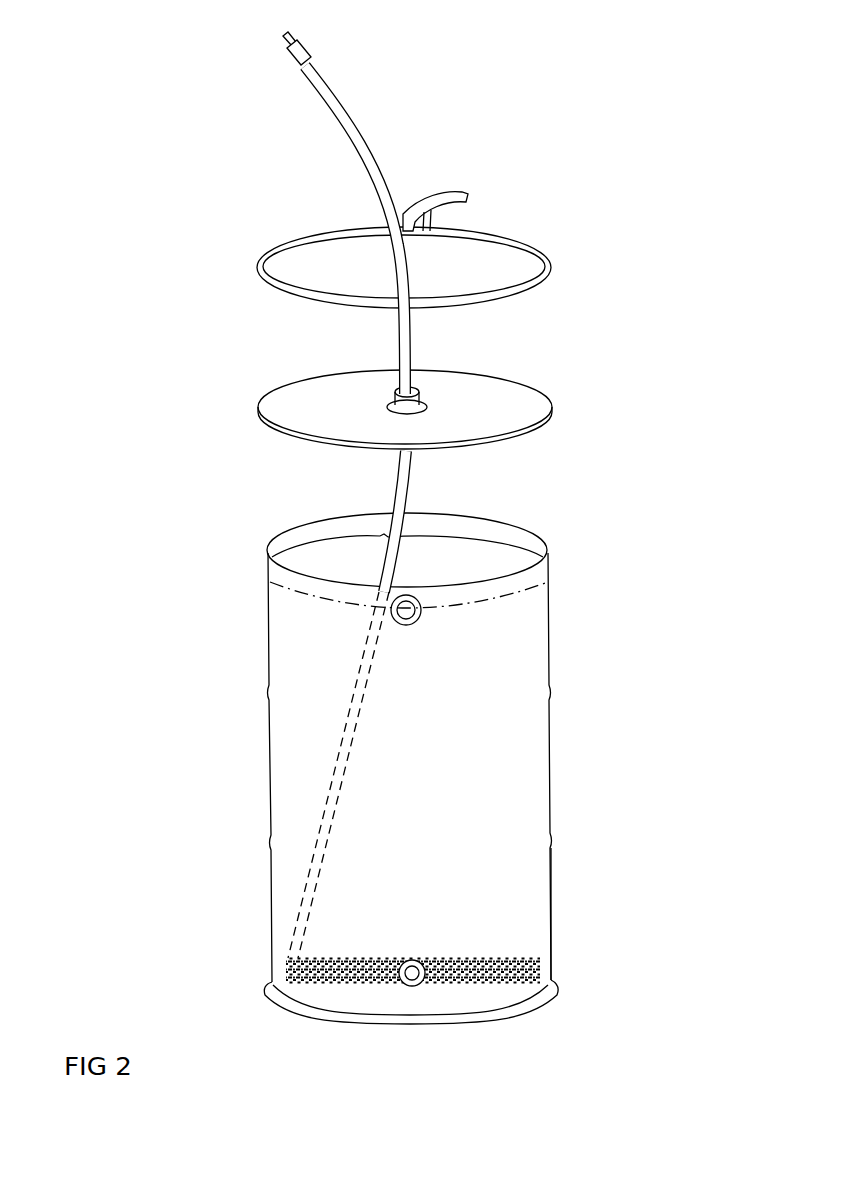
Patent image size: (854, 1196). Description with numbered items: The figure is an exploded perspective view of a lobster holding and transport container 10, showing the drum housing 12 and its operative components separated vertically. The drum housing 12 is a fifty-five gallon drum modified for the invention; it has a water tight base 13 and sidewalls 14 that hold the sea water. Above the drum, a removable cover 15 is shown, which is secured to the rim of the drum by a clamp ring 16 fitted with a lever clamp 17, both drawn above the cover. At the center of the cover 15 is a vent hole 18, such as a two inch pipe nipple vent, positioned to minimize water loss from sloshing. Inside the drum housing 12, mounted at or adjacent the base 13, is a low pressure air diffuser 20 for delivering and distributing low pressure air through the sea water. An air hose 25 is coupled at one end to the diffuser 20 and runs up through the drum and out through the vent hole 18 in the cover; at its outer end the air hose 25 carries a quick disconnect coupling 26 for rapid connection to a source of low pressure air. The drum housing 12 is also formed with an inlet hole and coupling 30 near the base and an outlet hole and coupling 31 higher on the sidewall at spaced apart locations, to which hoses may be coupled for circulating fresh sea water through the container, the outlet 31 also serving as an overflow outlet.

The container 10 is at (689, 324).
The drum housing 12 is at (549, 636).
The water tight base 13 is at (556, 1000).
The sidewalls 14 is at (552, 897).
The removable cover 15 is at (347, 416).
The clamp ring 16 is at (553, 268).
The lever clamp 17 is at (467, 194).
The vent hole 18 is at (419, 397).
The low pressure air diffuser 20 is at (483, 958).
The air hose 25 is at (359, 141).
The quick disconnect coupling 26 is at (308, 53).
The inlet hole and coupling 30 is at (412, 961).
The outlet hole and coupling 31 is at (417, 618).